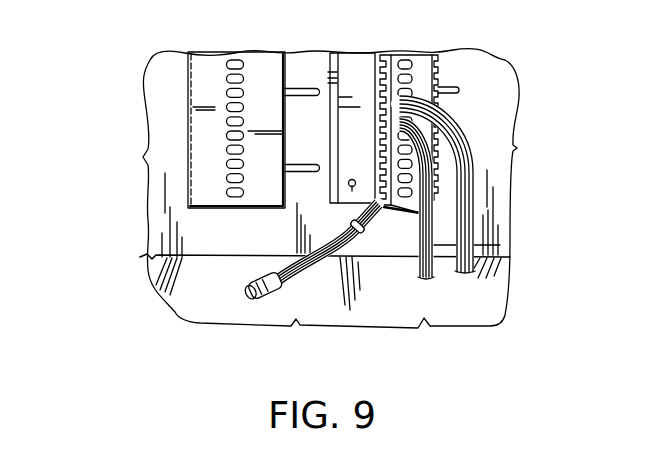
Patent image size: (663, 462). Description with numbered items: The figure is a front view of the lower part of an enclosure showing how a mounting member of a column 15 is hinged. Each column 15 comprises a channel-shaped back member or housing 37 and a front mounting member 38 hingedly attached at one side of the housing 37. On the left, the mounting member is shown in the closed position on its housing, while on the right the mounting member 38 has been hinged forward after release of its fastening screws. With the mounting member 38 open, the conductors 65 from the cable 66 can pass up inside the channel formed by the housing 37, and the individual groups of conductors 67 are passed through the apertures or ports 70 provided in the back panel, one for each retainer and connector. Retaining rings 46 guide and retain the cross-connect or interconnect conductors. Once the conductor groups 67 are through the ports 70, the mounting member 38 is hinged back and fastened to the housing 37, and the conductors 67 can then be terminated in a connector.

The column 15 is at (200, 98).
The back member or housing 37 is at (351, 72).
The mounting member 38 is at (425, 80).
The retaining ring 46 is at (300, 88).
The conductors 65 is at (353, 250).
The cable 66 is at (268, 300).
The groups of conductors 67 is at (433, 245).
The aperture or port 70 is at (403, 80).